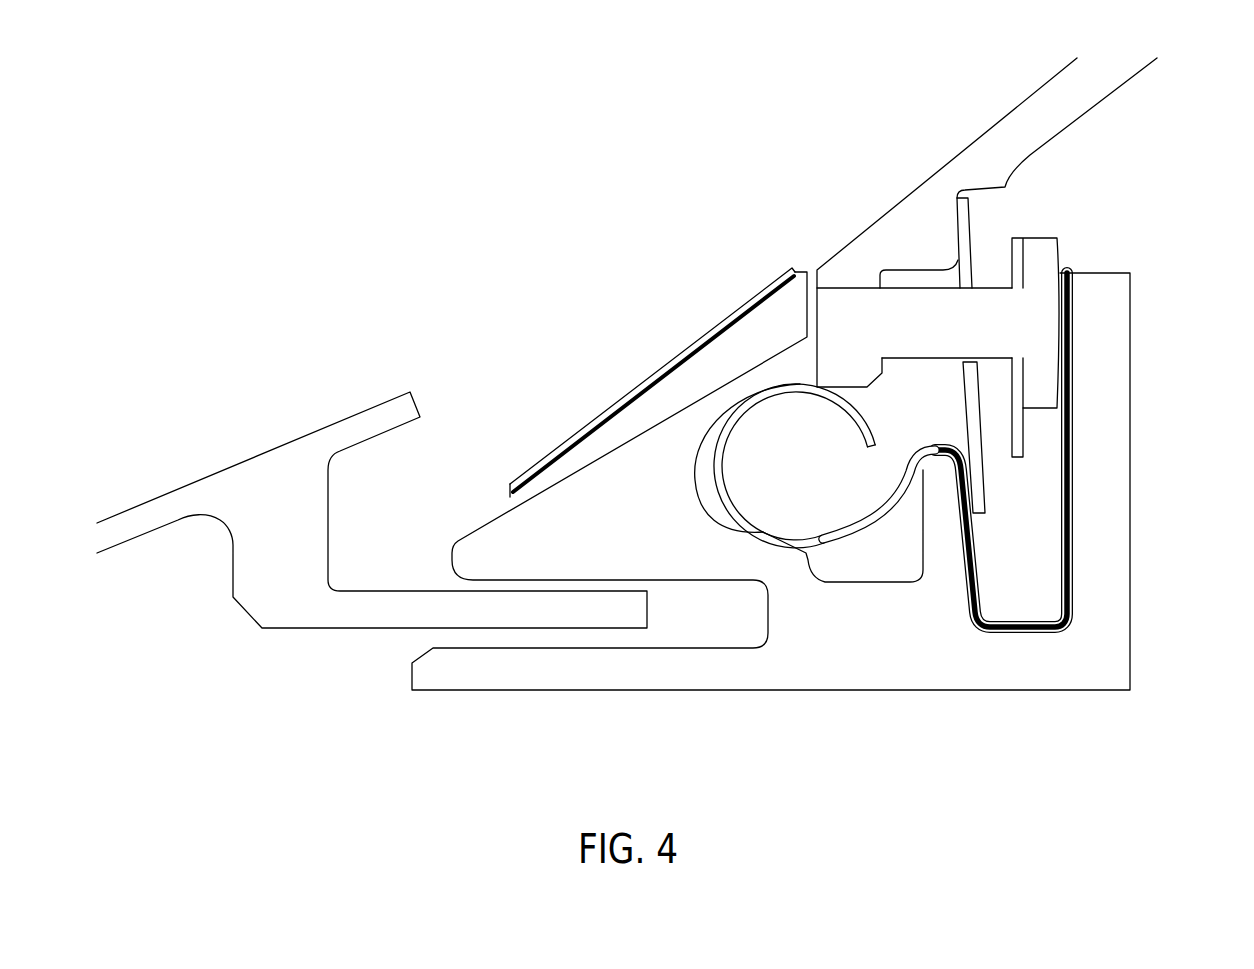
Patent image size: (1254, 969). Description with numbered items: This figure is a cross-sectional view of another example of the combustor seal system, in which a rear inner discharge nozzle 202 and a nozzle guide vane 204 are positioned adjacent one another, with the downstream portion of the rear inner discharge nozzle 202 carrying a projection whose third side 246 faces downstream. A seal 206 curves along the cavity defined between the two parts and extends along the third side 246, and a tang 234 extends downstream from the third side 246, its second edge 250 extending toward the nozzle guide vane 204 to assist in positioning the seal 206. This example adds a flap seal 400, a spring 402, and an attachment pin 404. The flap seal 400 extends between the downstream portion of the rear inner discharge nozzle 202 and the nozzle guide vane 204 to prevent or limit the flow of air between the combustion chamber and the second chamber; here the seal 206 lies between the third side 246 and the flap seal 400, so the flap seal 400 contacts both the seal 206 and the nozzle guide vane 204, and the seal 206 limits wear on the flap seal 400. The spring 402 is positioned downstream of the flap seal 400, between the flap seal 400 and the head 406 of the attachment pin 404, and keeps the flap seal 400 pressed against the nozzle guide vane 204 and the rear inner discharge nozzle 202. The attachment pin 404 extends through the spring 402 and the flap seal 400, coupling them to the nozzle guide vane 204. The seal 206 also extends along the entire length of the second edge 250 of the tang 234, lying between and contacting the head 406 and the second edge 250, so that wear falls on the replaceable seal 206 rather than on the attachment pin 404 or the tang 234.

The rear inner discharge nozzle 202 is at (680, 390).
The nozzle guide vane 204 is at (917, 187).
The seal 206 is at (730, 470).
The tang 234 is at (1122, 583).
The third side 246 is at (968, 588).
The second edge 250 is at (1073, 513).
The flap seal 400 is at (960, 223).
The spring 402 is at (1017, 423).
The attachment pin 404 is at (1048, 258).
The head 406 is at (1040, 328).